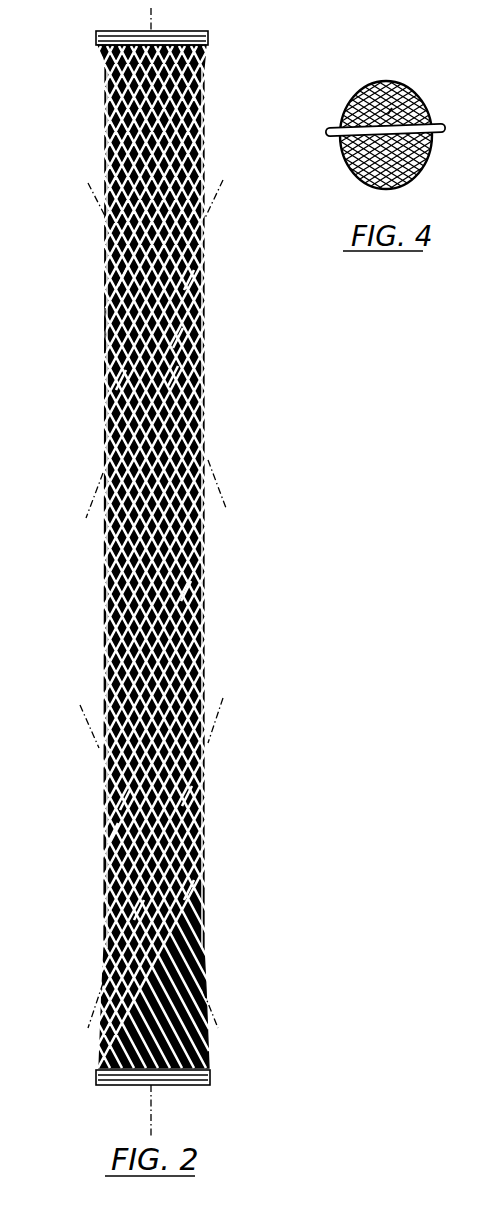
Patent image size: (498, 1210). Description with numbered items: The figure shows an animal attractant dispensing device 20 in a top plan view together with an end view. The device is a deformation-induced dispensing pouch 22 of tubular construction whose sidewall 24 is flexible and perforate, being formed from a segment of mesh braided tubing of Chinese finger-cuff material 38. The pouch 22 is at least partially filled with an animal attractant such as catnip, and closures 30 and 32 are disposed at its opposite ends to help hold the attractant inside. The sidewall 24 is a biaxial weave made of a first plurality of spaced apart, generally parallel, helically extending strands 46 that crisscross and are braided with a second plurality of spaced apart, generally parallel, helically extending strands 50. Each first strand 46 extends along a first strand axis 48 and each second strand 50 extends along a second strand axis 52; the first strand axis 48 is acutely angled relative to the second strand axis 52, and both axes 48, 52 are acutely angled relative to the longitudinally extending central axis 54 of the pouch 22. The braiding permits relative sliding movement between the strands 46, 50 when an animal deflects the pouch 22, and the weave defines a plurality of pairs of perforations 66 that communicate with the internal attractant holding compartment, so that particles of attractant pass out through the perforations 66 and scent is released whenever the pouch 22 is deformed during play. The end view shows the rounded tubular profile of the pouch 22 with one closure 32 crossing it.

In FIG. 4, the animal attractant dispensing device 20 is at (345, 76).
In FIG. 4, the deformation-induced dispensing pouch 22 is at (397, 113).
In FIG. 2, the sidewall 24 is at (200, 555).
In FIG. 4, the sidewall 24 is at (432, 97).
In FIG. 2, the closure 30 is at (88, 31).
In FIG. 2, the closure 32 is at (180, 1070).
In FIG. 4, the closure 32 is at (434, 118).
In FIG. 2, the Chinese finger-cuff material 38 is at (82, 323).
In FIG. 2, the first strands 46 is at (115, 267).
In FIG. 2, the first strand axis 48 is at (83, 187).
In FIG. 2, the second strands 50 is at (180, 275).
In FIG. 2, the second strand axis 52 is at (208, 192).
In FIG. 2, the central axis 54 is at (145, 12).
In FIG. 4, the central axis 54 is at (408, 95).
In FIG. 2, the perforations 66 is at (170, 330).